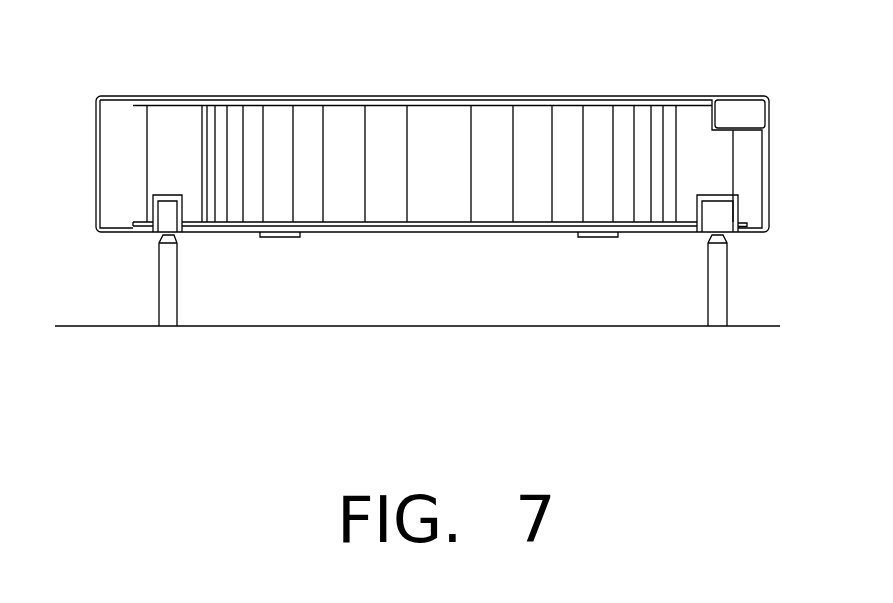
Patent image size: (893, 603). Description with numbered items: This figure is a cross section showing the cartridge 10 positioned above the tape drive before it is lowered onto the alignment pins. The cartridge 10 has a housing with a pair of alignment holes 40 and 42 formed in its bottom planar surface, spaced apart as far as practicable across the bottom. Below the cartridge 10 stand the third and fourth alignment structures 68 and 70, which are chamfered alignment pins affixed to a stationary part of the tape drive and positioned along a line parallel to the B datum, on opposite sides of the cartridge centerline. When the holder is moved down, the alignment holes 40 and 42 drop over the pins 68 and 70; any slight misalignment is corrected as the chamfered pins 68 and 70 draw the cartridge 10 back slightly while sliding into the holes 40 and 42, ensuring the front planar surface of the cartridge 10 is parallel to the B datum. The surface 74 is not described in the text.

The cartridge 10 is at (692, 68).
The alignment hole 40 is at (715, 208).
The alignment hole 42 is at (166, 208).
The third alignment structure 68 is at (715, 302).
The fourth alignment structure 70 is at (166, 300).
The mounting surface 74 is at (423, 325).